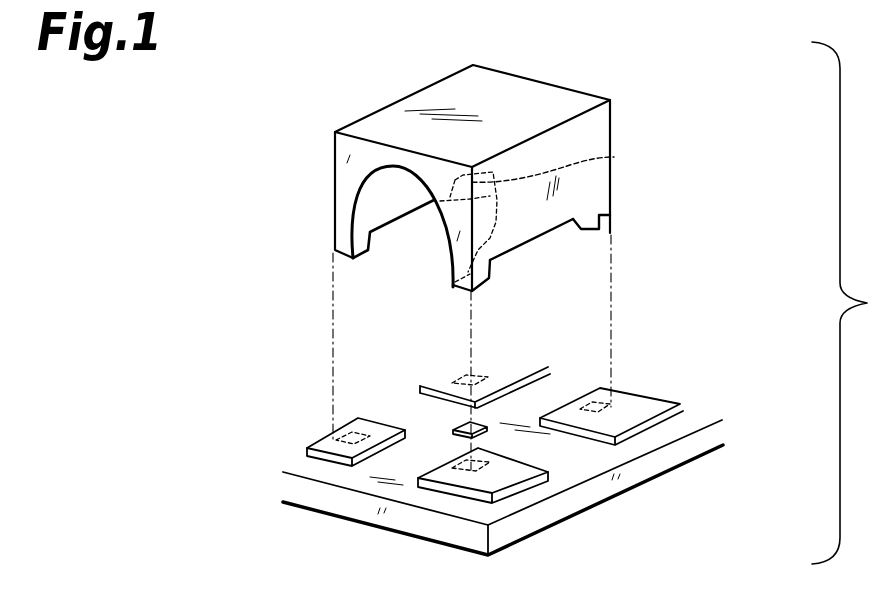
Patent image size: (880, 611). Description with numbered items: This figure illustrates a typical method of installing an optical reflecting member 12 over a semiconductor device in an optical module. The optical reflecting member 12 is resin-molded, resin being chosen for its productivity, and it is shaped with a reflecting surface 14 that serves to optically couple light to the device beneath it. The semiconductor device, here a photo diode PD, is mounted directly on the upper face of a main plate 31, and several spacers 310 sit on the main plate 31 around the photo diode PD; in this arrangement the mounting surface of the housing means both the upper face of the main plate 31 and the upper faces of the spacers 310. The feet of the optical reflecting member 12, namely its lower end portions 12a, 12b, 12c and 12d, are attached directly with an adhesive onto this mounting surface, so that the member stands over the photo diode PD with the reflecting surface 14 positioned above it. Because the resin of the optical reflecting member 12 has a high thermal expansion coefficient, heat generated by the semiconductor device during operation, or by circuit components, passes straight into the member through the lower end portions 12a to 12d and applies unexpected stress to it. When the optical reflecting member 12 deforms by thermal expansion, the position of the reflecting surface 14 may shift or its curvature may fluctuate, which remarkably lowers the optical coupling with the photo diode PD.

The optical reflecting member 12 is at (507, 103).
The lower end portion 12a is at (364, 250).
The lower end portion 12b is at (612, 158).
The lower end portion 12c is at (612, 218).
The lower end portion 12d is at (492, 278).
The reflecting surface 14 is at (385, 186).
The photo diode PD is at (463, 427).
The spacers 310 is at (647, 407).
The main plate 31 is at (663, 433).